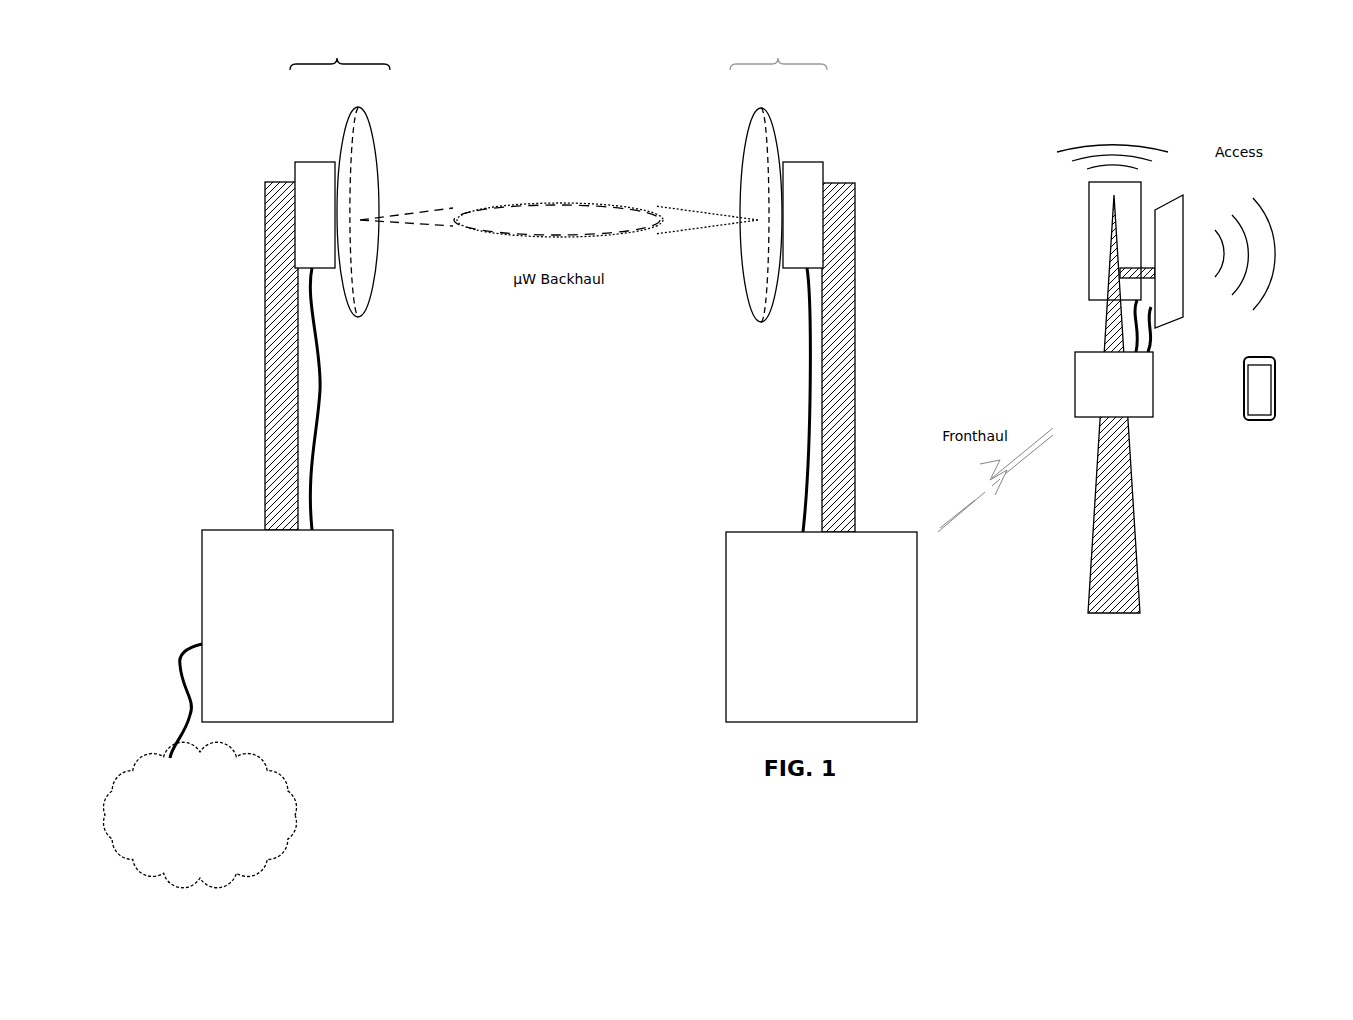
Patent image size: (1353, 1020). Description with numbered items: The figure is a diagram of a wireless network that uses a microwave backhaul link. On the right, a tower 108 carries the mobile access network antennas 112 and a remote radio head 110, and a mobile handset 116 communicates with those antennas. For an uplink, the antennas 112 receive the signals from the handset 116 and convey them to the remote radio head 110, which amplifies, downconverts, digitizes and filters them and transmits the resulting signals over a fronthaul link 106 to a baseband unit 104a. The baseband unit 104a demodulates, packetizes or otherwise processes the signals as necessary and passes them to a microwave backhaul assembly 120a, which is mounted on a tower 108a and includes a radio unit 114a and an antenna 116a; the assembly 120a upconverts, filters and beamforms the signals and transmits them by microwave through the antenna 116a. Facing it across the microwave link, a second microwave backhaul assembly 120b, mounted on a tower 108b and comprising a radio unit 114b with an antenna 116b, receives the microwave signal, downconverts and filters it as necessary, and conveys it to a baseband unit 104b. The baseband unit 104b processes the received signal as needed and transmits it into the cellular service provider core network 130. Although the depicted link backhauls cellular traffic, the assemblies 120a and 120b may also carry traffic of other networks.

The baseband unit 104a is at (821, 627).
The baseband unit 104b is at (297, 626).
The fronthaul link 106 is at (995, 504).
The tower 108 is at (1095, 554).
The tower 108a is at (855, 325).
The tower 108b is at (266, 343).
The remote radio head 110 is at (1114, 384).
The mobile access network antennas 112 is at (1090, 198).
The microwave radio unit 114a is at (806, 162).
The microwave radio unit 114b is at (318, 162).
The mobile handset 116 is at (1258, 421).
The antenna 116a is at (758, 109).
The microwave antenna lens 116b is at (358, 108).
The microwave backhaul assembly 120a is at (778, 58).
The microwave backhaul assembly 120b is at (337, 58).
The core network 130 is at (200, 766).